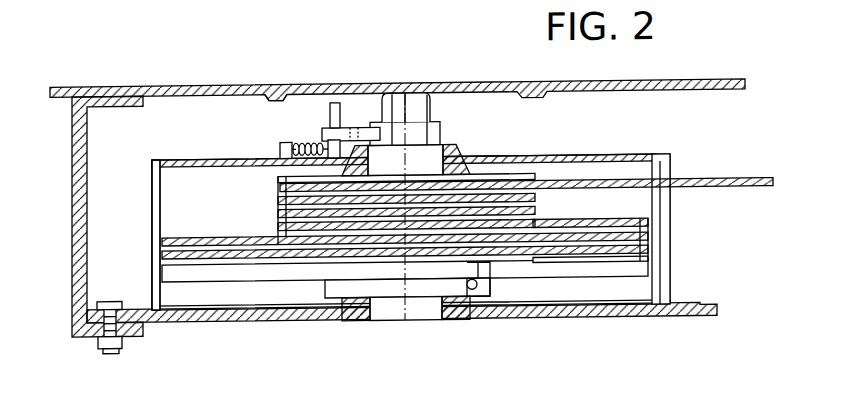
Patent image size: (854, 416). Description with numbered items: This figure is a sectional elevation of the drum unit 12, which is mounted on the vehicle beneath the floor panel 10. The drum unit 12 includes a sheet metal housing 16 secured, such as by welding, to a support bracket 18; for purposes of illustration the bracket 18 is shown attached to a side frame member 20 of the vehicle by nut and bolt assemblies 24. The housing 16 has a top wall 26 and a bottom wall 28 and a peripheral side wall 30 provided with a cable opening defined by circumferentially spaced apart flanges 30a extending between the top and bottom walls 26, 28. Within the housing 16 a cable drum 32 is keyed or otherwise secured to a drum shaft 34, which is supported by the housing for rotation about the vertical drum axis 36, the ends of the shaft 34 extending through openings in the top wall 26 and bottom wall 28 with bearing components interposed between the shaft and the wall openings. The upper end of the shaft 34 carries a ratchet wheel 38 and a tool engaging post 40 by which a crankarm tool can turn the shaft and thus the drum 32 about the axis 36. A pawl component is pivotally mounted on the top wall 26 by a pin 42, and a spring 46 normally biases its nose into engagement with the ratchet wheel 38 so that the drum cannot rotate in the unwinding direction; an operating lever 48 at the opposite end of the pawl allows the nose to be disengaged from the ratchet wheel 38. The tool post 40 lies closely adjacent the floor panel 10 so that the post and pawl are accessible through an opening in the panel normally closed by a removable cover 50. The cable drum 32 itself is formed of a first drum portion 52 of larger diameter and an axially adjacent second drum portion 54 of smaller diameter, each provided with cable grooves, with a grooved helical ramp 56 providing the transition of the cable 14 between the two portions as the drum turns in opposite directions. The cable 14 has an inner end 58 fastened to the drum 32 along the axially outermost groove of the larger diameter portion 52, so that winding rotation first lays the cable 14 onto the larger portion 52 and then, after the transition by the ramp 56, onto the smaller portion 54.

The floor panel 10 is at (178, 88).
The drum unit 12 is at (622, 137).
The cable 14 is at (760, 187).
The sheet metal housing 16 is at (152, 186).
The support bracket 18 is at (238, 324).
The side frame member 20 is at (80, 339).
The nut and bolt assemblies 24 is at (120, 350).
The top wall 26 is at (220, 162).
The bottom wall 28 is at (210, 312).
The peripheral side wall 30 is at (152, 237).
The flanges 30a is at (660, 296).
The cable drum 32 is at (576, 286).
The drum shaft 34 is at (400, 327).
The vertical drum axis 36 is at (410, 104).
The ratchet wheel 38 is at (441, 138).
The tool engaging post 40 is at (380, 115).
The pin 42 is at (369, 160).
The spring 46 is at (300, 147).
The operating lever 48 is at (335, 107).
The removable cover 50 is at (305, 90).
The first drum portion 52 is at (160, 265).
The second drum portion 54 is at (278, 204).
The grooved helical ramp 56 is at (600, 213).
The inner end 58 is at (476, 296).